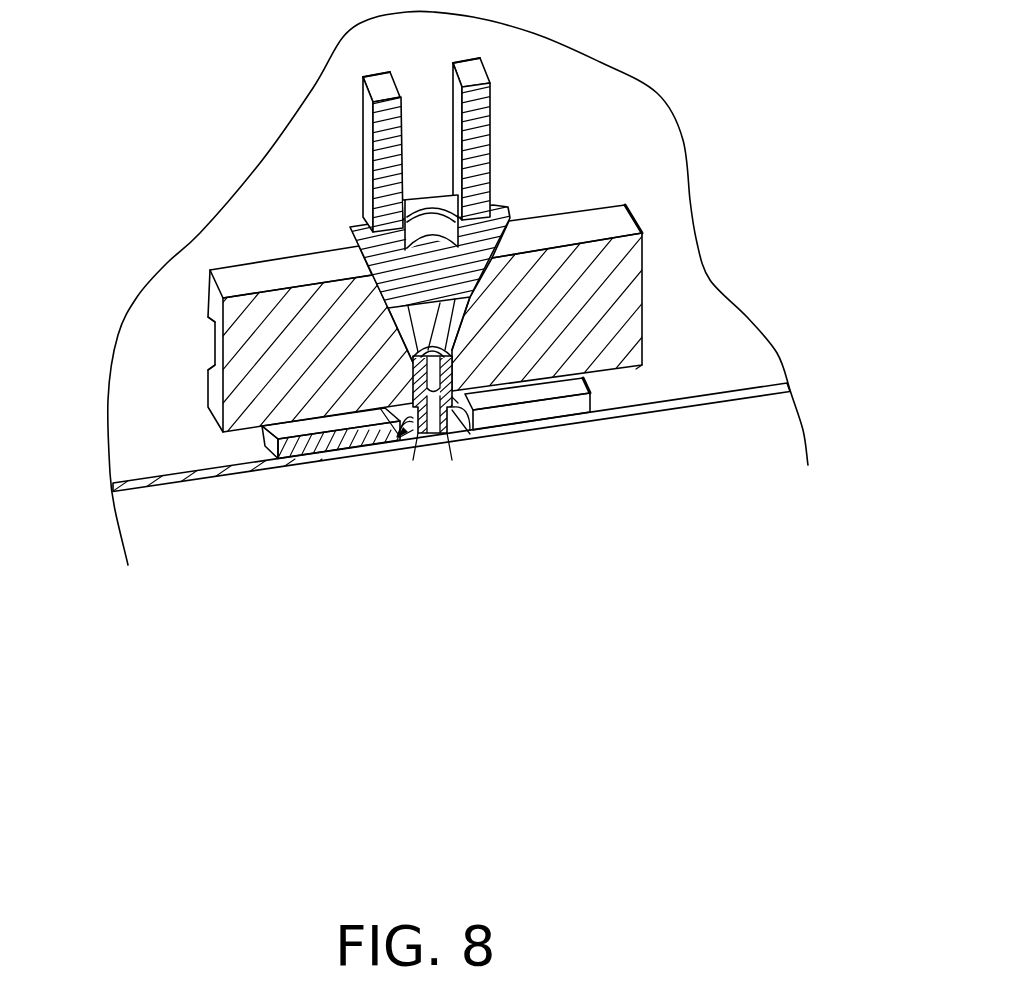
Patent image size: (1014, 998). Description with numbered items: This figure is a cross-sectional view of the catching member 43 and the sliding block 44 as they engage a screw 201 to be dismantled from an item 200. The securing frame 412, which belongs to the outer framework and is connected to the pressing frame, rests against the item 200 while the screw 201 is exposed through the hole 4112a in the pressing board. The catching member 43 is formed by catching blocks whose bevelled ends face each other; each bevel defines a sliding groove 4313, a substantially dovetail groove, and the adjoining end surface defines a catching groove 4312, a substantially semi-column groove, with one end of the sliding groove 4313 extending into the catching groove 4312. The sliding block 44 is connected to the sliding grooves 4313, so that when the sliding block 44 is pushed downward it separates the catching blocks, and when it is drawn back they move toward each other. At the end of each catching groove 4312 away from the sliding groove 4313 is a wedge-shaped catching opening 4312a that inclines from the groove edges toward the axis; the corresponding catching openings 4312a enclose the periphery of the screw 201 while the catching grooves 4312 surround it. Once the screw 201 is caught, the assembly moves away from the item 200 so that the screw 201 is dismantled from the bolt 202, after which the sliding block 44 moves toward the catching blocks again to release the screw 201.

The item 200 is at (733, 335).
The screw 201 is at (385, 405).
The bolt 202 is at (447, 408).
The catching member 43 is at (272, 280).
The sliding block 44 is at (480, 177).
The securing frame 412 is at (540, 408).
The hole 4112a is at (404, 446).
The catching groove 4312 is at (425, 340).
The catching opening 4312a is at (455, 398).
The sliding groove 4313 is at (443, 300).